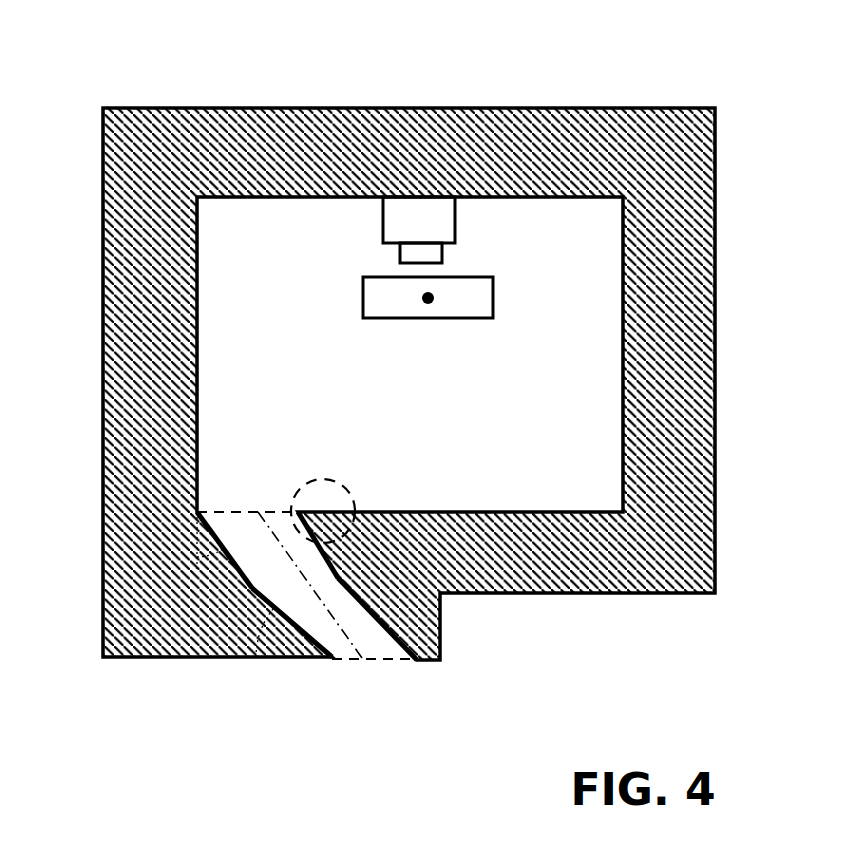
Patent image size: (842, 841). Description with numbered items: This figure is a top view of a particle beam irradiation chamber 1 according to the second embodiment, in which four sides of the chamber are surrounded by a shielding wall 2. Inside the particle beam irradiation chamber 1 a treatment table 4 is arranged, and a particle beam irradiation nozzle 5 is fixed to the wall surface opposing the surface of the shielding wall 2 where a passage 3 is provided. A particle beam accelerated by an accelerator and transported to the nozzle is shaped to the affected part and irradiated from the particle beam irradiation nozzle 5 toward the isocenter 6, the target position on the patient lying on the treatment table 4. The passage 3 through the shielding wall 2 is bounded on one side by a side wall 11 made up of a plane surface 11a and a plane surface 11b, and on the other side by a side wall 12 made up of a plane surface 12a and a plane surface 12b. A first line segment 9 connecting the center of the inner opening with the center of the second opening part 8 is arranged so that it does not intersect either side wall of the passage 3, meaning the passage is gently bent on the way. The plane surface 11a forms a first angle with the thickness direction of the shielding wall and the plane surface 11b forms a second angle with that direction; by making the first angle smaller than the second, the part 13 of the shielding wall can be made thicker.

The particle beam irradiation chamber 1 is at (409, 337).
The shielding wall 2 is at (270, 123).
The passage 3 is at (250, 590).
The treatment table 4 is at (468, 284).
The particle beam irradiation nozzle 5 is at (410, 220).
The isocenter 6 is at (428, 298).
The second opening part 8 is at (385, 660).
The first line segment 9 is at (365, 592).
The side wall 11 is at (267, 505).
The plane surface 11a is at (216, 538).
The plane surface 11b is at (270, 603).
The side wall 12 is at (347, 655).
The plane surface 12a is at (344, 588).
The plane surface 12b is at (386, 628).
The part of a shielding wall 13 is at (345, 478).